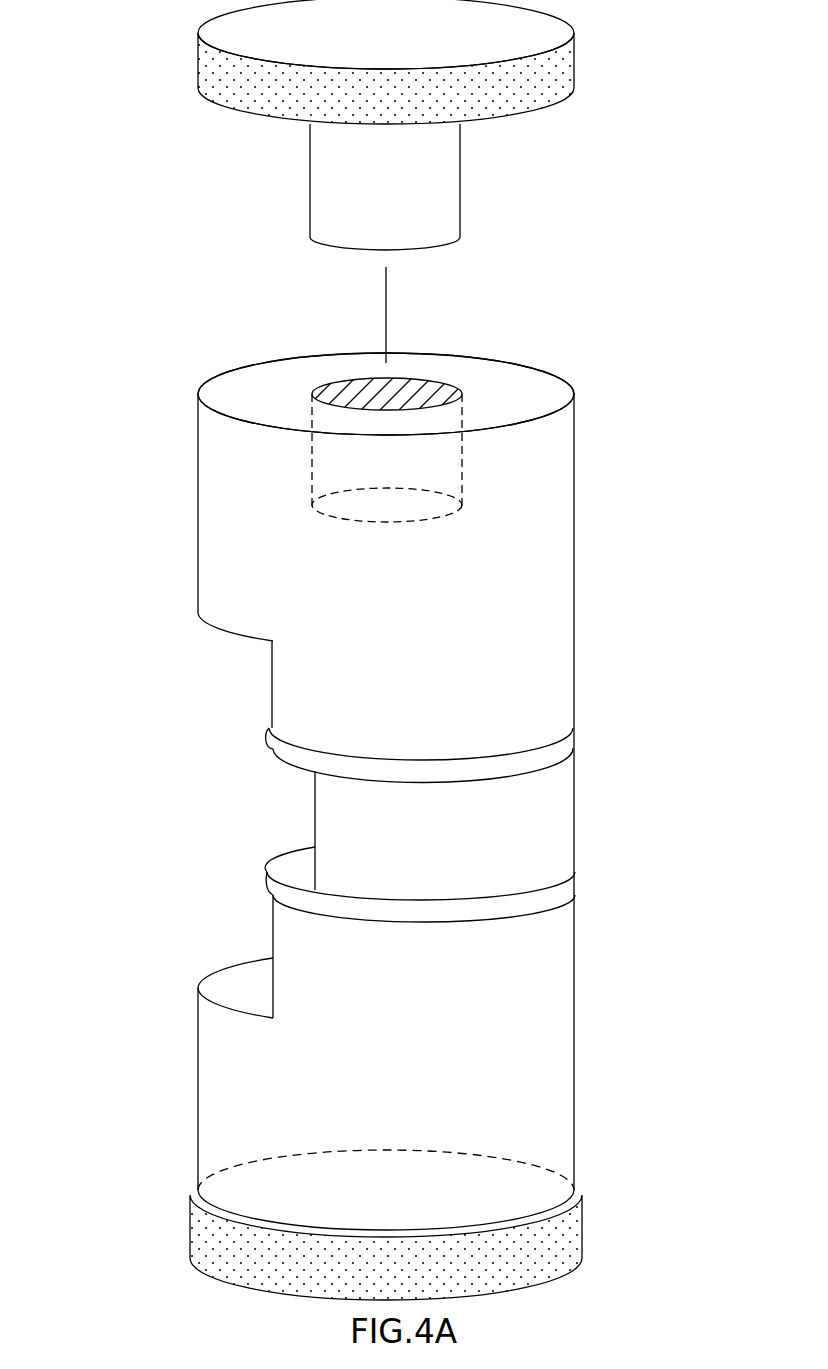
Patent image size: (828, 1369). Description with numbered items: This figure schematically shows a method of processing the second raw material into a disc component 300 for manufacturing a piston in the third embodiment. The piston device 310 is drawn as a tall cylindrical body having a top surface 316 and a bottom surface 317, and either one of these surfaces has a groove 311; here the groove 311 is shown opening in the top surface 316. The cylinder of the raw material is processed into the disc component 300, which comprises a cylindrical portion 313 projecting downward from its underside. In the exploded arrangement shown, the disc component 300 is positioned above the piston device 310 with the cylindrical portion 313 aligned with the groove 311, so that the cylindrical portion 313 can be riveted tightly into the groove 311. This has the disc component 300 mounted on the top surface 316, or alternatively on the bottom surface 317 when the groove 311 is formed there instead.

The disc component 300 is at (197, 66).
The cylindrical portion 313 is at (310, 178).
The piston device 310 is at (573, 653).
The top surface 316 is at (523, 408).
The groove 311 is at (310, 465).
The bottom surface 317 is at (517, 1190).